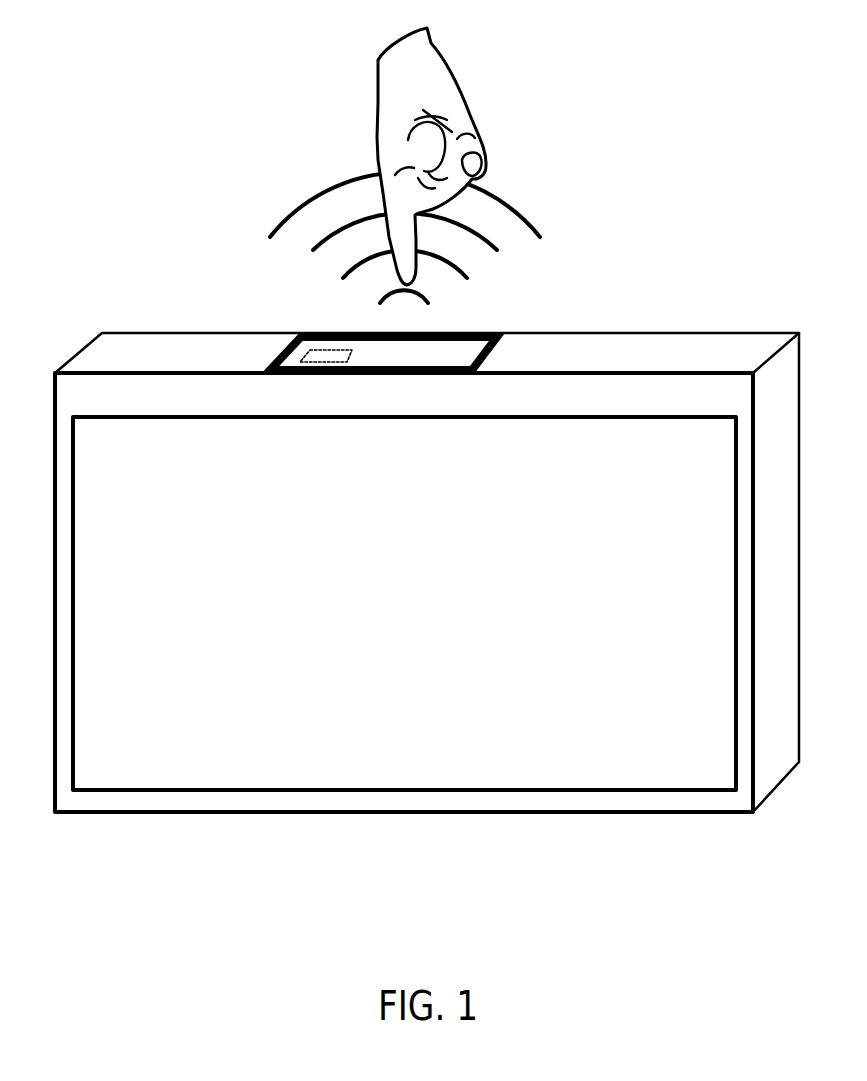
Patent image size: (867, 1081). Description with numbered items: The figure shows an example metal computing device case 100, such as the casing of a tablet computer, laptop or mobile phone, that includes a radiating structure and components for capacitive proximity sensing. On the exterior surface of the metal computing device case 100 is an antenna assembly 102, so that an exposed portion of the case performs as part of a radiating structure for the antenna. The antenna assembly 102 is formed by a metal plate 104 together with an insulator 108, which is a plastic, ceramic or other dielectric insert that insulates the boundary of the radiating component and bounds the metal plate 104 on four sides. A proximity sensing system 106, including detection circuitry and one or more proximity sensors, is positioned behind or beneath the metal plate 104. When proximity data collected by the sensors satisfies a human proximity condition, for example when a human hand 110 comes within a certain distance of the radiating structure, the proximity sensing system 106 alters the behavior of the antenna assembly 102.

The metal computing device case 100 is at (140, 258).
The antenna assembly 102 is at (313, 317).
The metal plate 104 is at (464, 361).
The proximity sensing system 106 is at (352, 350).
The insulator 108 is at (493, 360).
The human hand 110 is at (455, 67).